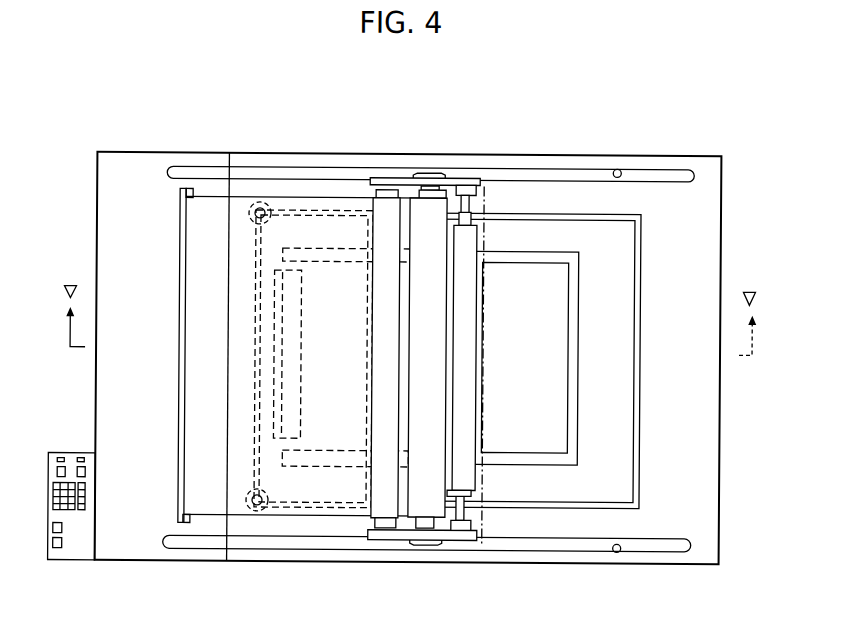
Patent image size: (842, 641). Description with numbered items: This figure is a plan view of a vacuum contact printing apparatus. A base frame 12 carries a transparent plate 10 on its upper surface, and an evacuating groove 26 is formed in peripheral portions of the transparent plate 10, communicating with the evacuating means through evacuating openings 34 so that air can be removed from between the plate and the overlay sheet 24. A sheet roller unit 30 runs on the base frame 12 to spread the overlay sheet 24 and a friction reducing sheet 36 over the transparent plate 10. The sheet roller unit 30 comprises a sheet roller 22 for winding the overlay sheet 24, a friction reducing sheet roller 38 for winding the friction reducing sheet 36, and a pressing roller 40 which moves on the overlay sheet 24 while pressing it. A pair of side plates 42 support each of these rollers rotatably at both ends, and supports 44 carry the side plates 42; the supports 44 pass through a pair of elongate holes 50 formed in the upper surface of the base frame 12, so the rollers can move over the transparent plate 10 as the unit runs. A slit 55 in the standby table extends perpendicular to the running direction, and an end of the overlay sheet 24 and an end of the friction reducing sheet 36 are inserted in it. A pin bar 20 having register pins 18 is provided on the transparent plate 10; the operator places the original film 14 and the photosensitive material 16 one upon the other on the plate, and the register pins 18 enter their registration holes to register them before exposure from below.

The transparent plate 10 is at (620, 240).
The base frame 12 is at (704, 250).
The original film 14 is at (580, 305).
The photosensitive material 16 is at (562, 391).
The register pins 18 is at (291, 293).
The pin bar 20 is at (301, 347).
The sheet roller 22 is at (438, 296).
The overlay sheet 24 is at (306, 206).
The evacuating groove 26 is at (644, 340).
The sheet roller unit 30 is at (401, 163).
The evacuating openings 34 is at (258, 203).
The friction reducing sheet 36 is at (471, 212).
The friction reducing sheet roller 38 is at (468, 378).
The pressing roller 40 is at (380, 391).
The side plates 42 is at (466, 188).
The supports 44 is at (436, 172).
The elongate holes 50 is at (617, 168).
The slit 55 is at (179, 250).